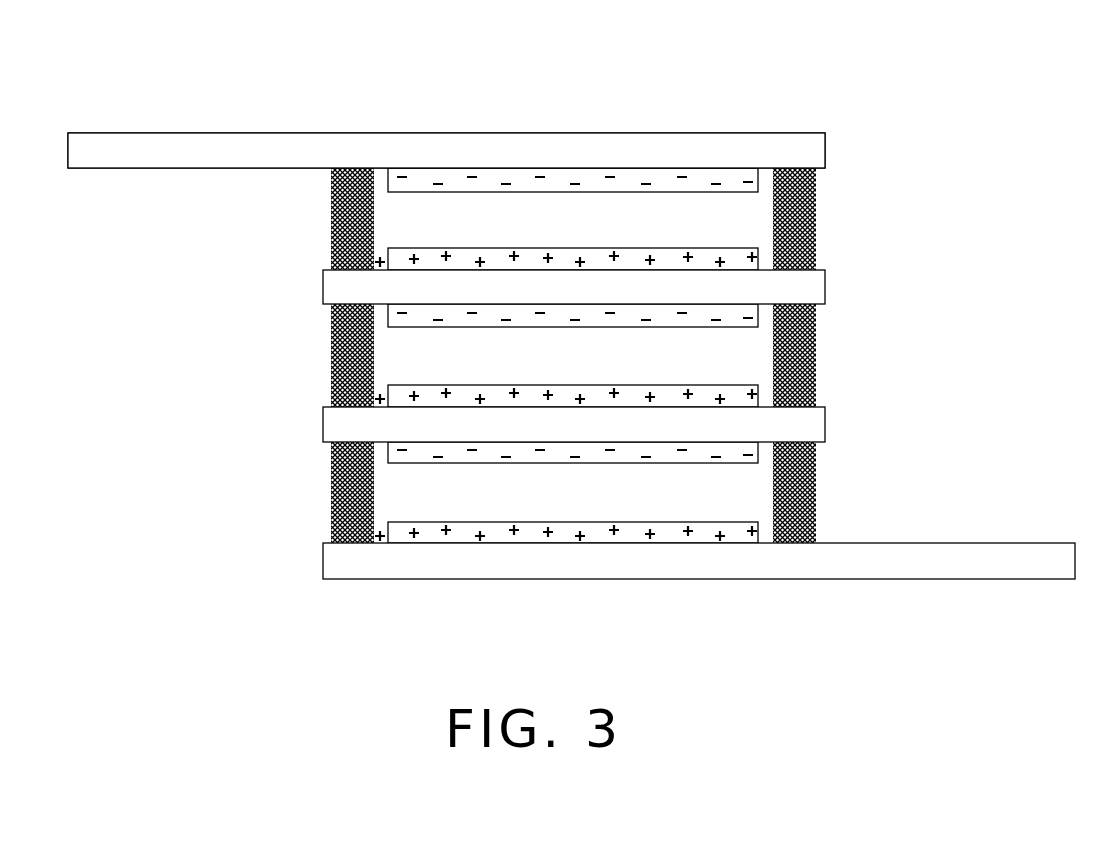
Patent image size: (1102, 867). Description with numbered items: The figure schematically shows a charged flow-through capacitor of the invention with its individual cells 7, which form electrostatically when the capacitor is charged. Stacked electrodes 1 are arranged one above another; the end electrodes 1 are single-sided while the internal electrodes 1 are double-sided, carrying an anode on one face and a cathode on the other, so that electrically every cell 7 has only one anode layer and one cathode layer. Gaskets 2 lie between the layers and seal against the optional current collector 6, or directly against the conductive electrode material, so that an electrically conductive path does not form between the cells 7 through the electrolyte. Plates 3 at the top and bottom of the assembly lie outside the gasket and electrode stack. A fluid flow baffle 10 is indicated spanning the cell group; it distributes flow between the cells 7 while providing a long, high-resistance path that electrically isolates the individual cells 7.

The electrodes 1 is at (640, 199).
The gaskets 2 is at (318, 224).
The current collector plates 3 is at (136, 121).
The current collector 6 is at (552, 113).
The individual cells 7 is at (574, 356).
The fluid flow baffle 10 is at (805, 580).